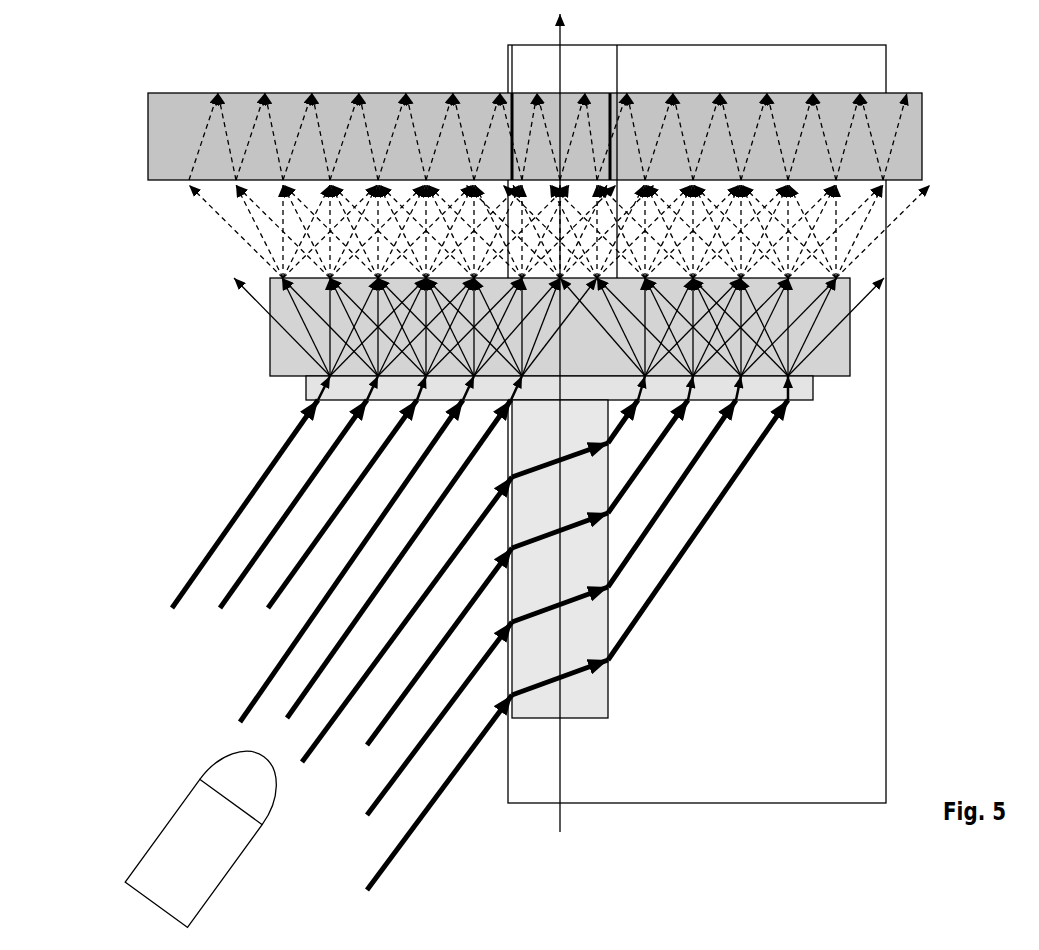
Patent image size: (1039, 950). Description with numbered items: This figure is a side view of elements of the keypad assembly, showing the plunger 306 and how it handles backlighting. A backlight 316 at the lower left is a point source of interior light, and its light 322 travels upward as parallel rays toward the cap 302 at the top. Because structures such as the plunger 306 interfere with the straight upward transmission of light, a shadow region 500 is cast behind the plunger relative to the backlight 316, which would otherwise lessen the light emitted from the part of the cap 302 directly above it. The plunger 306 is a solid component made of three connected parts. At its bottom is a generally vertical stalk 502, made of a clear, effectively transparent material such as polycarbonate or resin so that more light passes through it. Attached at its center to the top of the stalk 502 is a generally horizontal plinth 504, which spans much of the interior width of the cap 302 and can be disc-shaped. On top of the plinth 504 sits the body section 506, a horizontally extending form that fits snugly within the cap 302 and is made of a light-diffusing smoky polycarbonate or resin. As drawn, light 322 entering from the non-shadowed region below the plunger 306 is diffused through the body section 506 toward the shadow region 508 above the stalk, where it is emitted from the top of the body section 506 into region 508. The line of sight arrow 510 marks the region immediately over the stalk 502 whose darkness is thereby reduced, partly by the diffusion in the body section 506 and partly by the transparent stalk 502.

The cap 302 is at (576, 136).
The plunger 306 is at (574, 498).
The backlight 316 is at (210, 822).
The light 322 is at (539, 464).
The shadow region 500 is at (697, 424).
The stalk 502 is at (604, 559).
The plinth 504 is at (586, 402).
The body section 506 is at (574, 327).
The shadow region above stalk 508 is at (564, 161).
The line of sight arrow 510 is at (554, 439).